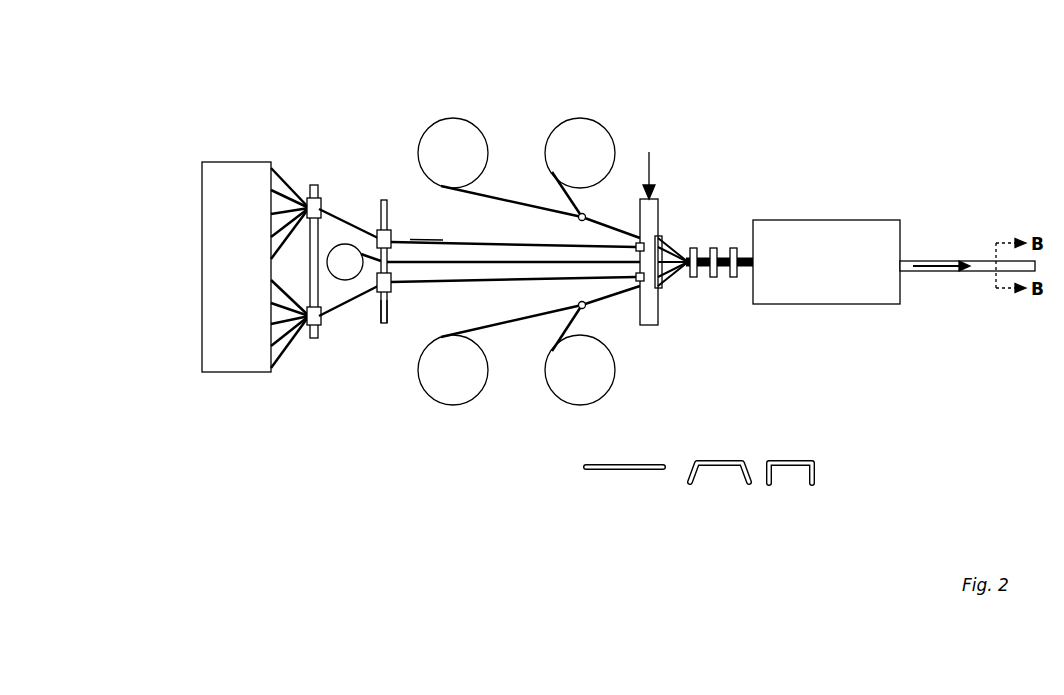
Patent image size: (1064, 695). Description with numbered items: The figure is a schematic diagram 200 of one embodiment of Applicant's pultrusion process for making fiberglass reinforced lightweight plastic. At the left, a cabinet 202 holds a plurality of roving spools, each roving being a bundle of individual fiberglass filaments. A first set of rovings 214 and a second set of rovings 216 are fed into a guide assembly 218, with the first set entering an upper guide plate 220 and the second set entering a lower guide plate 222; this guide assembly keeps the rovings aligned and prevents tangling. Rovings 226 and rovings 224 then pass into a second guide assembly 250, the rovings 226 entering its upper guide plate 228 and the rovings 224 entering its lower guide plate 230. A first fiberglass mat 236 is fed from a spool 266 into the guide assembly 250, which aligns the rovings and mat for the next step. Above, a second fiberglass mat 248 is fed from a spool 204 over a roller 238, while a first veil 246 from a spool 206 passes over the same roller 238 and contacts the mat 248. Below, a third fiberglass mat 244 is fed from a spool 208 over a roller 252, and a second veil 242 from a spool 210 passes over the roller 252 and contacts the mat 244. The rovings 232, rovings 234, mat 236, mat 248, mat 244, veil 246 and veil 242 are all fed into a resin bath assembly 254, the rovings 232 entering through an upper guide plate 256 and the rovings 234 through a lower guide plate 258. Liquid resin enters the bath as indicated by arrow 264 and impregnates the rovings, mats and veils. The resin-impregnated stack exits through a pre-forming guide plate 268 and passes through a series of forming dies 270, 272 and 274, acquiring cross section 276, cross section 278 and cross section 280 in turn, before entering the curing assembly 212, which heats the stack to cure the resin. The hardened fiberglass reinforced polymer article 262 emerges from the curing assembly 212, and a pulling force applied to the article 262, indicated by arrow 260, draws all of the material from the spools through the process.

The schematic diagram 200 is at (962, 47).
The cabinet 202 is at (220, 275).
The spool 204 is at (437, 162).
The spool 206 is at (564, 162).
The spool 208 is at (437, 379).
The spool 210 is at (564, 379).
The curing assembly 212 is at (807, 299).
The first set of rovings 214 is at (276, 187).
The second set of rovings 216 is at (276, 348).
The guide assembly 218 is at (314, 185).
The upper guide plate 220 is at (326, 212).
The lower guide plate 222 is at (322, 323).
The rovings 224 is at (347, 298).
The rovings 226 is at (384, 200).
The upper guide plate 228 is at (392, 240).
The lower guide plate 230 is at (392, 291).
The rovings 232 is at (443, 242).
The rovings 234 is at (433, 283).
The first fiberglass mat 236 is at (470, 262).
The roller 238 is at (584, 214).
The second veil 242 is at (563, 331).
The third fiberglass mat 244 is at (478, 327).
The first veil 246 is at (562, 189).
The second fiberglass mat 248 is at (478, 197).
The second guide assembly 250 is at (385, 324).
The roller 252 is at (584, 307).
The resin bath assembly 254 is at (660, 324).
The upper guide plate 256 is at (636, 246).
The lower guide plate 258 is at (636, 279).
The arrow 260 is at (930, 271).
The fiberglass reinforced polymer article 262 is at (982, 261).
The arrow 264 is at (650, 158).
The spool 266 is at (332, 270).
The pre-forming guide plate 268 is at (662, 240).
The forming die 270 is at (693, 277).
The forming die 272 is at (713, 277).
The forming die 274 is at (733, 277).
The cross section 276 is at (650, 462).
The cross section 278 is at (719, 462).
The cross section 280 is at (794, 462).